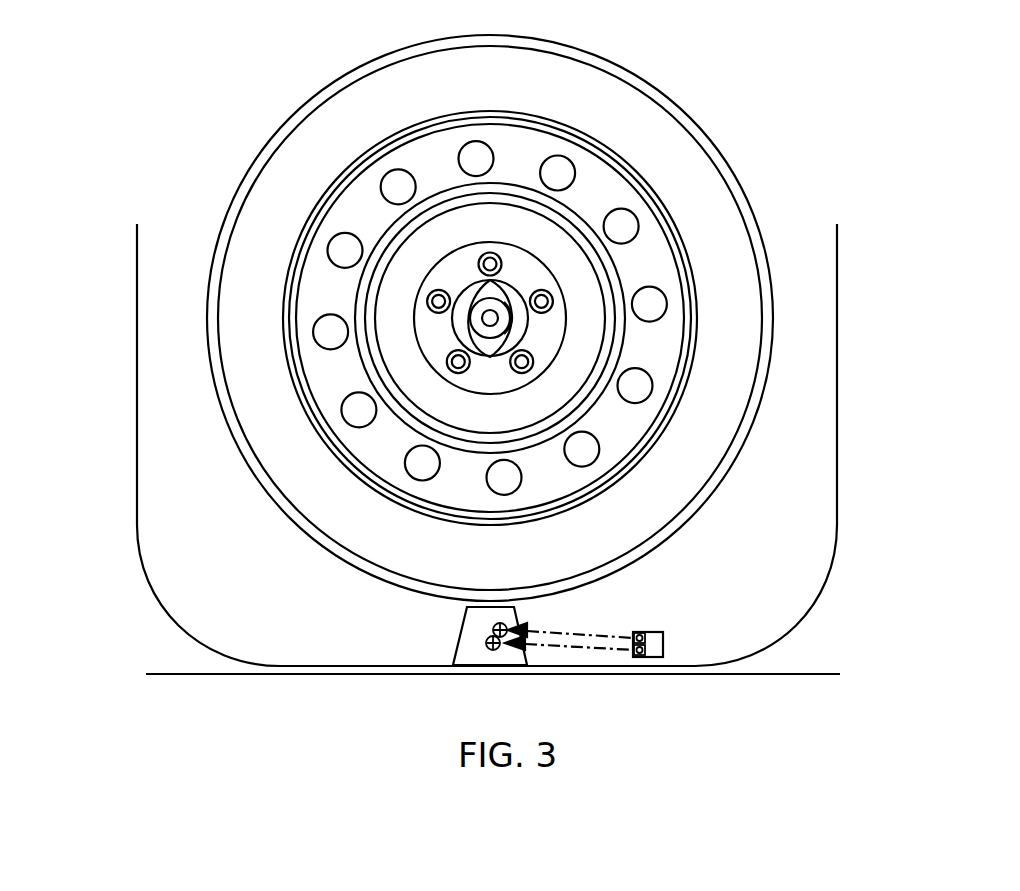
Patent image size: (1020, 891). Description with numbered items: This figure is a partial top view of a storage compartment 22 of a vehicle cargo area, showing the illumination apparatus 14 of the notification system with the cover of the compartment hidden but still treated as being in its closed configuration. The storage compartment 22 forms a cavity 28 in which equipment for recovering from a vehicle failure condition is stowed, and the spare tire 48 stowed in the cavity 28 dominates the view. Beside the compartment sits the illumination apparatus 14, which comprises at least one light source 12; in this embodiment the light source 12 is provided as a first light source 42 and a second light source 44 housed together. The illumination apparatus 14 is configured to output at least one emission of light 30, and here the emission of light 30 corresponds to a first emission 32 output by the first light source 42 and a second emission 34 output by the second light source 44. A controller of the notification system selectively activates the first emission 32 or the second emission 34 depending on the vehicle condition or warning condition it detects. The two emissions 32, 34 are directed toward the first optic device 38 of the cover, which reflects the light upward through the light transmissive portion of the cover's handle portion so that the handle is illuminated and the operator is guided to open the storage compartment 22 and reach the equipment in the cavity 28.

The light source 12 is at (623, 623).
The illumination apparatus 14 is at (451, 449).
The storage compartment 22 is at (449, 445).
The cavity 28 is at (205, 579).
The emission of light 30 is at (584, 623).
The first emission 32 is at (598, 633).
The second emission 34 is at (596, 651).
The first optic device 38 is at (472, 655).
The first light source 42 is at (652, 632).
The second light source 44 is at (680, 645).
The spare tire 48 is at (684, 165).